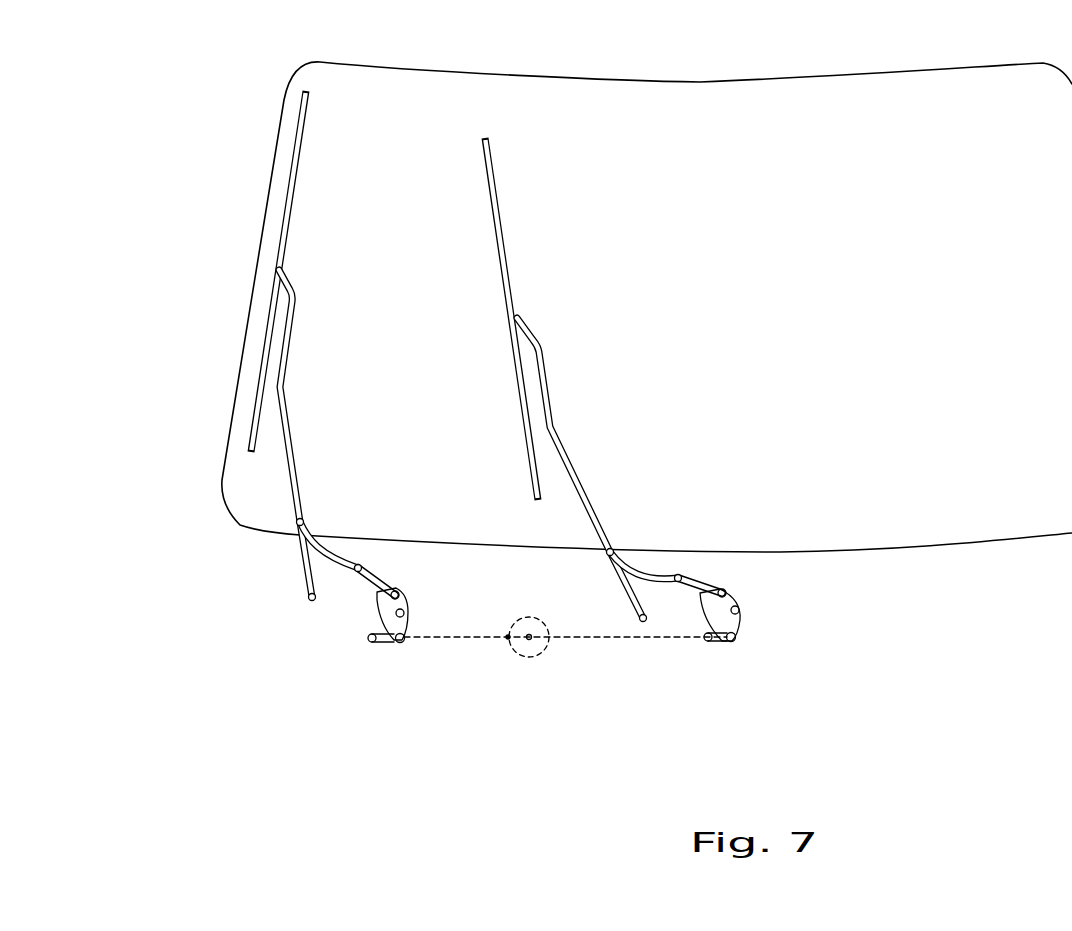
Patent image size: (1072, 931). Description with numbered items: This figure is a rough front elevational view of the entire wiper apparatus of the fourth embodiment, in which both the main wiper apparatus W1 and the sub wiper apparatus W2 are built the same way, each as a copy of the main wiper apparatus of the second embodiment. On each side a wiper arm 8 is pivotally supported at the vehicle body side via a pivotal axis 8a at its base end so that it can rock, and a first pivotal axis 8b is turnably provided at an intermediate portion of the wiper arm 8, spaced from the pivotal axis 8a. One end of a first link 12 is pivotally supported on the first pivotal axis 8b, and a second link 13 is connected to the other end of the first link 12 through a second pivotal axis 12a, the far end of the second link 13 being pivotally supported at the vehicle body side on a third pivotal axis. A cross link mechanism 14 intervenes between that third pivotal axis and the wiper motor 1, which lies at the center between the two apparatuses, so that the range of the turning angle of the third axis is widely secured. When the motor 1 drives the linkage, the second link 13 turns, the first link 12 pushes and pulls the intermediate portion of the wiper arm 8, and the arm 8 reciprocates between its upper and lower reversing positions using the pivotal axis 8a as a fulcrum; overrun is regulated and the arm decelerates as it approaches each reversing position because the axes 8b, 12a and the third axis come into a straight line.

The wiper motor 1 is at (536, 656).
The main wiper arm 8 is at (300, 567).
The pivotal axis 8a is at (312, 600).
The first pivotal axis 8b is at (298, 527).
The first link 12 is at (325, 543).
The second pivotal axis 12a is at (357, 560).
The second link 13 is at (380, 580).
The cross link mechanism 14 is at (390, 647).
The main wiper apparatus W1 is at (355, 320).
The sub wiper apparatus W2 is at (713, 437).